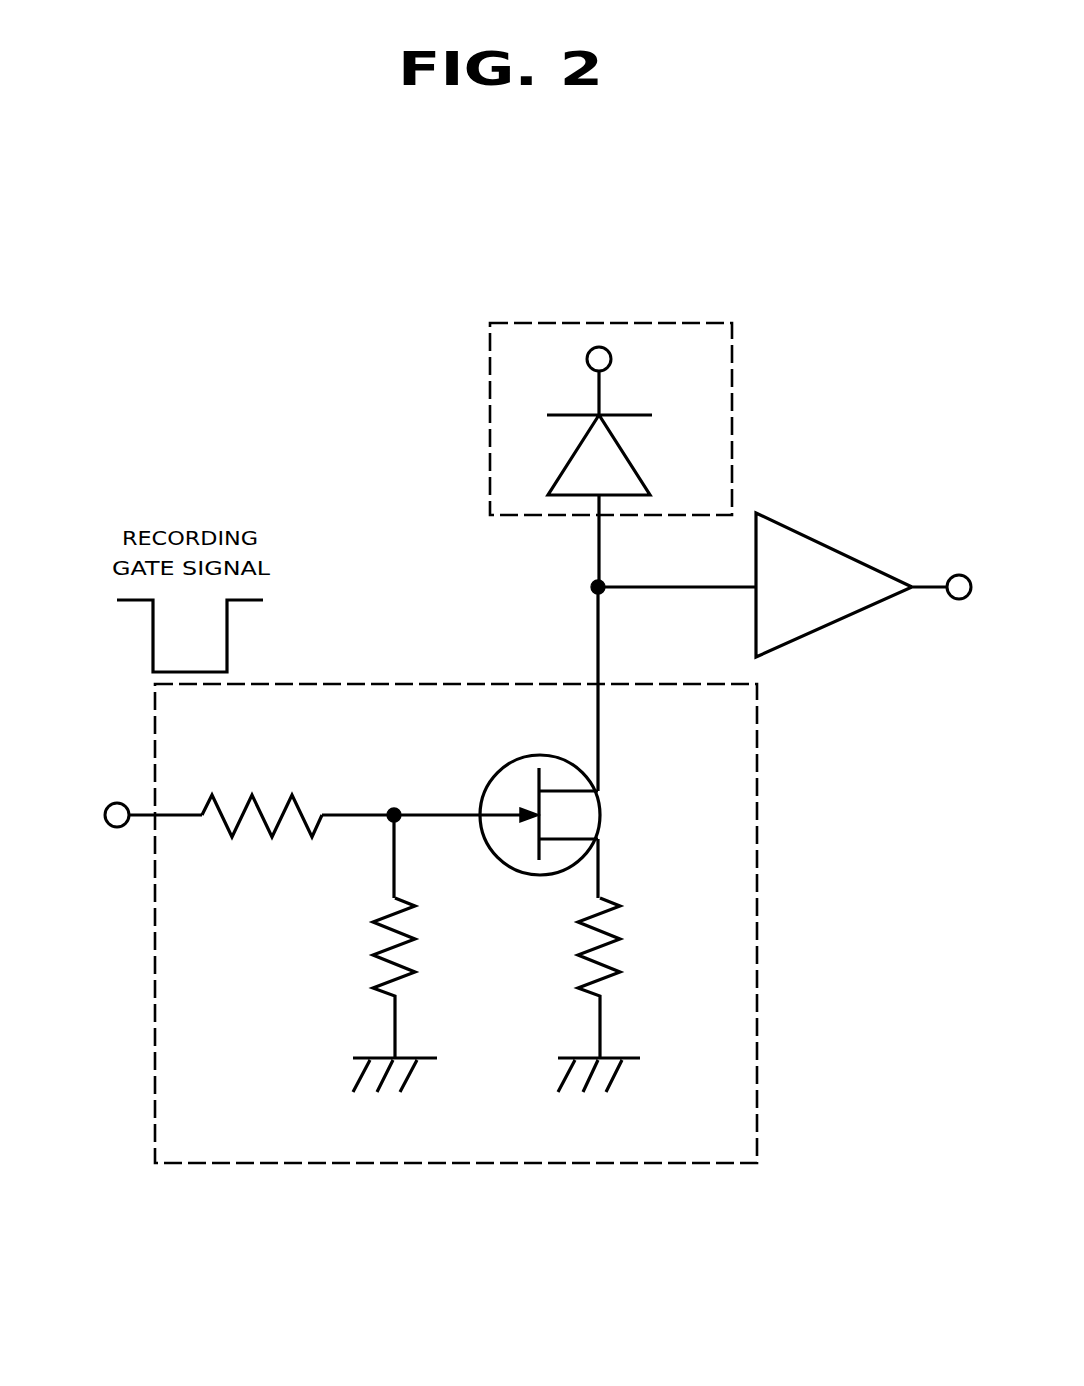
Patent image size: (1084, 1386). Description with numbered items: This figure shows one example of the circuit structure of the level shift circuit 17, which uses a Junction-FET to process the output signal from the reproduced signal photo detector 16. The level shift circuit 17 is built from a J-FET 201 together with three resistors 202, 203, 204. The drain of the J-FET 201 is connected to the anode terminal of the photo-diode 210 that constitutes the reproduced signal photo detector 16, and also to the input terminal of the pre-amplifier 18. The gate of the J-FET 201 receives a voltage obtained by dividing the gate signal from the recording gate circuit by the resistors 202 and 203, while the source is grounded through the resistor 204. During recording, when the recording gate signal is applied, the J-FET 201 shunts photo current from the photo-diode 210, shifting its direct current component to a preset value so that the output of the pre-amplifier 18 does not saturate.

The reproduced signal photo detector 16 is at (595, 321).
The photo-diode 210 is at (626, 447).
The pre-amplifier 18 is at (856, 558).
The level shift circuit 17 is at (253, 1165).
The resistor 202 is at (272, 795).
The J-FET 201 is at (602, 808).
The resistor 203 is at (370, 950).
The resistor 204 is at (622, 940).